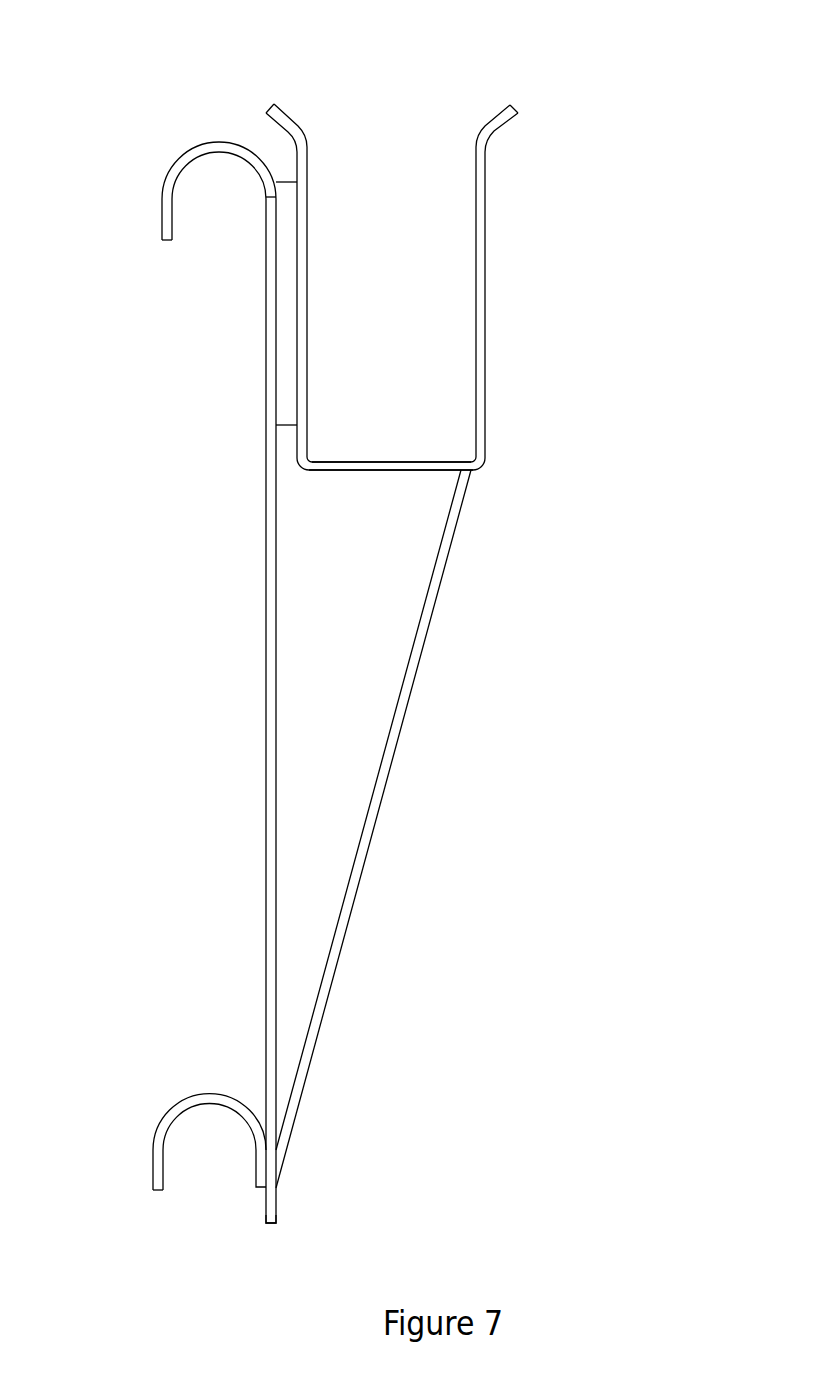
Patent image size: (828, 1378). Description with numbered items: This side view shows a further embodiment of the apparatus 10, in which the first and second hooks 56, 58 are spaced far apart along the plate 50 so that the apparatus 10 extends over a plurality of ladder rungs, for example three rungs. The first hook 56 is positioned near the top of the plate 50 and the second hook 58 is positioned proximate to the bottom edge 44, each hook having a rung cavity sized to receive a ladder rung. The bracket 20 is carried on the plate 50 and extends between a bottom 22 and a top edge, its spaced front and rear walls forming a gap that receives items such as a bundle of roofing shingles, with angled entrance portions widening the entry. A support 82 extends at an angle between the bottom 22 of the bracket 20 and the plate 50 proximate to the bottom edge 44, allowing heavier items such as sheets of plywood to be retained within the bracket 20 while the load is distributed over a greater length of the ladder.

The apparatus 10 is at (579, 84).
The bracket 20 is at (485, 300).
The bottom 22 is at (432, 471).
The bottom edge 44 is at (271, 1223).
The plate 50 is at (265, 723).
The first hook 56 is at (162, 200).
The second hook 58 is at (153, 1170).
The support 82 is at (373, 830).